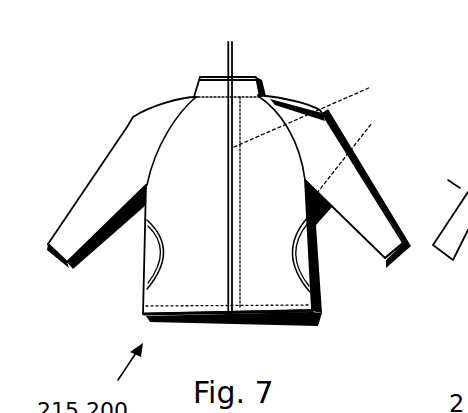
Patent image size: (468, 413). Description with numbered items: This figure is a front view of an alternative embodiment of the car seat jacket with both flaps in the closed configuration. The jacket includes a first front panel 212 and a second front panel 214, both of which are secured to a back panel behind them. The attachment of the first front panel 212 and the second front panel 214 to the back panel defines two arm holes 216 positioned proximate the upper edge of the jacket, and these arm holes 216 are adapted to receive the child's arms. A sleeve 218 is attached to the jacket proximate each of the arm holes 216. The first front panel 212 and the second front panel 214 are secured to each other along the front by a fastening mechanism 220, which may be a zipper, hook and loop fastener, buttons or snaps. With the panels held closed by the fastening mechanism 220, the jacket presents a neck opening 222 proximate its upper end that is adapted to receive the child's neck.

The first front panel 212 is at (190, 167).
The second front panel 214 is at (280, 297).
The arm holes 216 is at (178, 117).
The sleeve 218 is at (78, 203).
The fastening mechanism 220 is at (334, 120).
The neck opening 222 is at (232, 156).